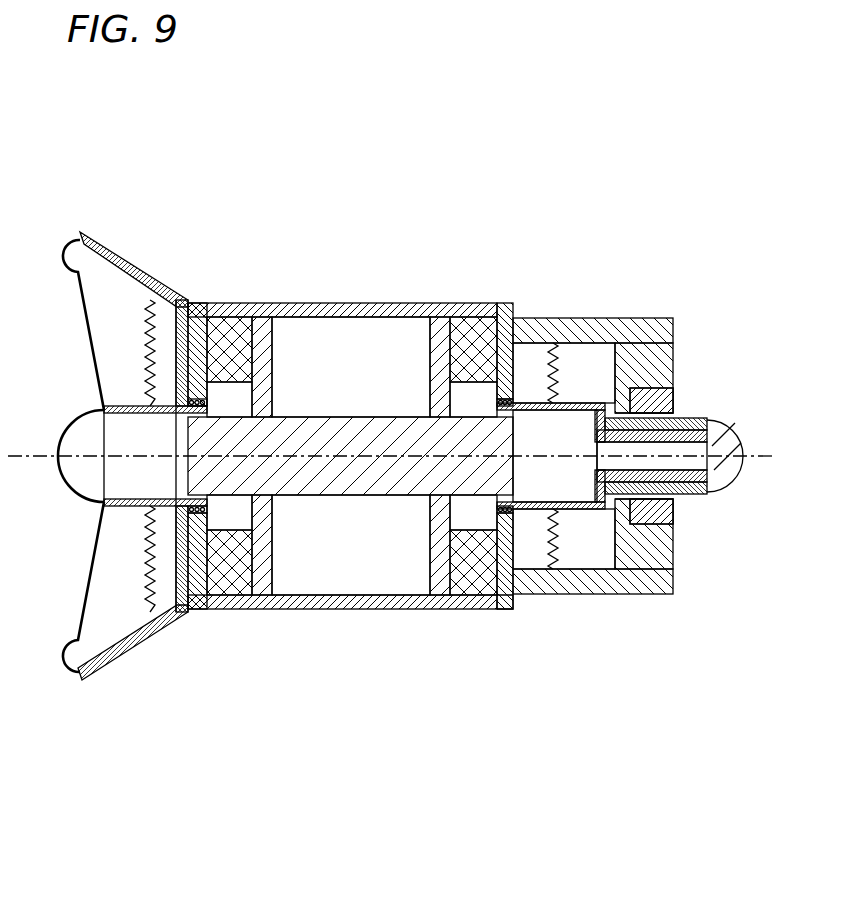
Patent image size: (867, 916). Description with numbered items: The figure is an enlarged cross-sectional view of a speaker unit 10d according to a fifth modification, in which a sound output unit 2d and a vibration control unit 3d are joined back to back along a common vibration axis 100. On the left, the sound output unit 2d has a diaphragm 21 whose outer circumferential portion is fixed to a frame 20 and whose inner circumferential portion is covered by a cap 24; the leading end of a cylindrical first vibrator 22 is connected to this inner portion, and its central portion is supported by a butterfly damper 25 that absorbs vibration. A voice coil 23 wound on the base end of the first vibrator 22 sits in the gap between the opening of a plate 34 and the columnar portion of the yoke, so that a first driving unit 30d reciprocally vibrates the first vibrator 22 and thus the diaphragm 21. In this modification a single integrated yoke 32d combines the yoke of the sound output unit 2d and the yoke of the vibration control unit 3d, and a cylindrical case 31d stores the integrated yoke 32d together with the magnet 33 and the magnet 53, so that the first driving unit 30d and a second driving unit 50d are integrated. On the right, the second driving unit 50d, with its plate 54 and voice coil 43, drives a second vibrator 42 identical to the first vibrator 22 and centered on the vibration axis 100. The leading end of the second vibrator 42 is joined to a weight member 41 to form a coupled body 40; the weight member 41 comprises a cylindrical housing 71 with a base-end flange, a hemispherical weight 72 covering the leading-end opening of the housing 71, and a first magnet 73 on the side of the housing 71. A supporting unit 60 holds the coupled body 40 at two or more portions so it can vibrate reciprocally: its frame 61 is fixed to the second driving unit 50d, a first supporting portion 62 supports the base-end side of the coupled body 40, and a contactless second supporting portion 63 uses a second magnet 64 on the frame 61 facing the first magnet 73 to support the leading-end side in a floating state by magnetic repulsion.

The vibration axis 100 is at (13, 456).
The sound output unit 2d is at (153, 507).
The vibration control unit 3d is at (598, 500).
The speaker unit 10d is at (354, 395).
The frame 20 is at (115, 472).
The diaphragm 21 is at (88, 333).
The first vibrator 22 is at (123, 406).
The voice coil 23 is at (197, 399).
The cap 24 is at (66, 483).
The butterfly damper 25 is at (145, 602).
The first driving unit 30d is at (350, 448).
The case 31d is at (352, 303).
The integrated yoke 32d is at (360, 492).
The magnet 33 is at (228, 594).
The plate 34 is at (196, 598).
The coupled body 40 is at (607, 552).
The weight member 41 is at (689, 498).
The second vibrator 42 is at (587, 506).
The voice coil 43 is at (506, 399).
The second driving unit 50d is at (474, 447).
The magnet 53 is at (470, 594).
The plate 54 is at (510, 598).
The supporting unit 60 is at (619, 400).
The frame 61 is at (622, 326).
The first supporting portion 62 is at (562, 360).
The second supporting portion 63 is at (702, 397).
The second magnet 64 is at (677, 393).
The housing 71 is at (698, 497).
The hemispherical weight 72 is at (733, 434).
The first magnet 73 is at (700, 426).